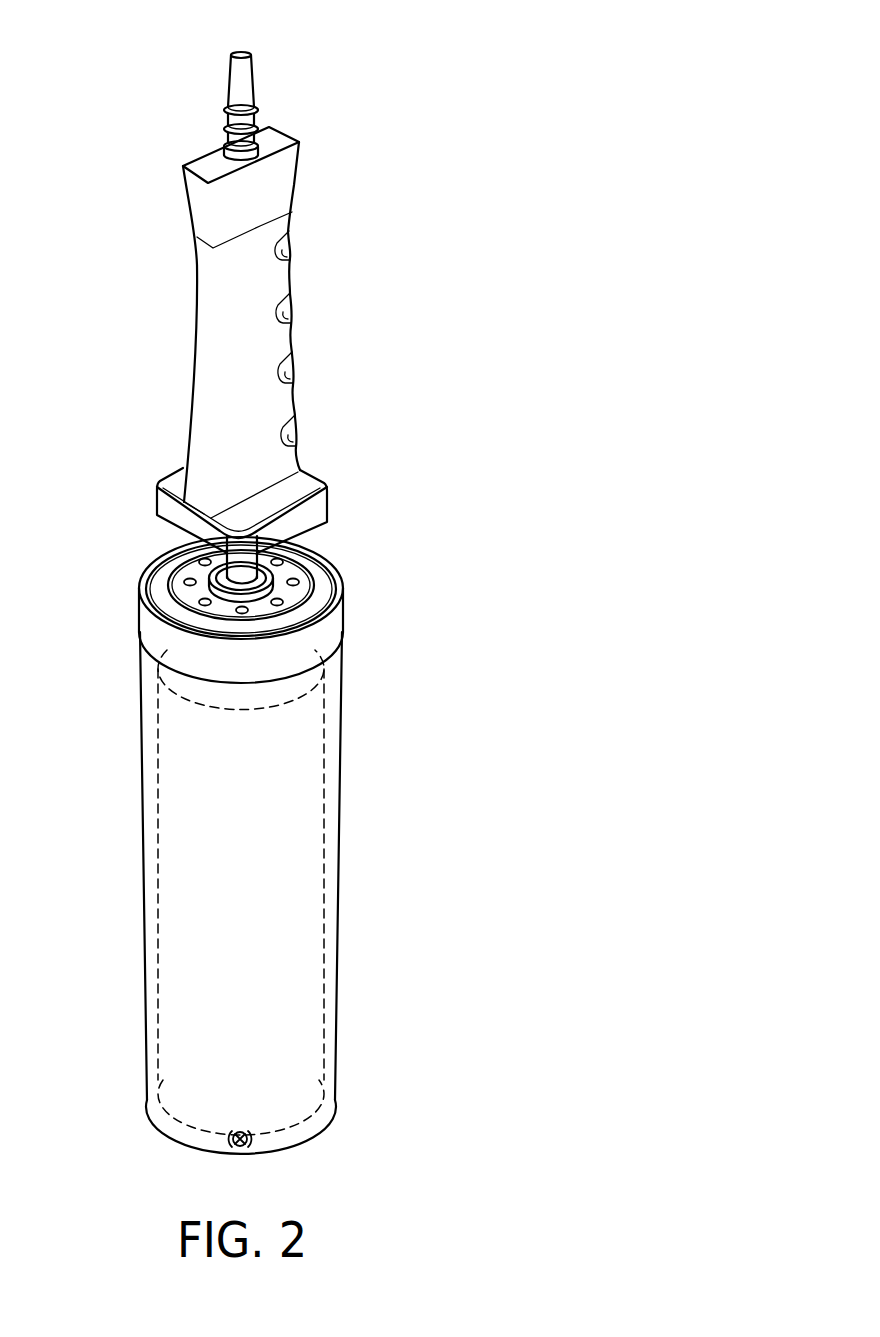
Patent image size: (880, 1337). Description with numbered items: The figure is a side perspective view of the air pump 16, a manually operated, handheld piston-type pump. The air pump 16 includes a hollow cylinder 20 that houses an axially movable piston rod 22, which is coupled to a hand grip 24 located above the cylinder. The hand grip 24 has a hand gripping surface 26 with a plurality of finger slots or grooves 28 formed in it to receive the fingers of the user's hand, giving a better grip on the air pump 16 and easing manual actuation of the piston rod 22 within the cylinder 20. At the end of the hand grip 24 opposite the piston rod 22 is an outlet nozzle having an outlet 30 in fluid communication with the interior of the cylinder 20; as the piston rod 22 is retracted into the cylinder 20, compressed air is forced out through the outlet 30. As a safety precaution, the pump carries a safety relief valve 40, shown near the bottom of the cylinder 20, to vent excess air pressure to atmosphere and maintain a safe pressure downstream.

The air pump 16 is at (378, 112).
The outlet 30 is at (237, 90).
The hand grip 24 is at (182, 333).
The finger slots or grooves 28 is at (283, 245).
The hand gripping surface 26 is at (273, 346).
The piston rod 22 is at (255, 572).
The hollow cylinder 20 is at (293, 938).
The safety relief valve 40 is at (232, 1142).